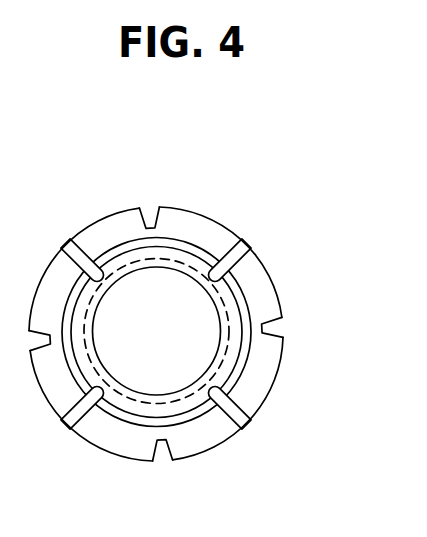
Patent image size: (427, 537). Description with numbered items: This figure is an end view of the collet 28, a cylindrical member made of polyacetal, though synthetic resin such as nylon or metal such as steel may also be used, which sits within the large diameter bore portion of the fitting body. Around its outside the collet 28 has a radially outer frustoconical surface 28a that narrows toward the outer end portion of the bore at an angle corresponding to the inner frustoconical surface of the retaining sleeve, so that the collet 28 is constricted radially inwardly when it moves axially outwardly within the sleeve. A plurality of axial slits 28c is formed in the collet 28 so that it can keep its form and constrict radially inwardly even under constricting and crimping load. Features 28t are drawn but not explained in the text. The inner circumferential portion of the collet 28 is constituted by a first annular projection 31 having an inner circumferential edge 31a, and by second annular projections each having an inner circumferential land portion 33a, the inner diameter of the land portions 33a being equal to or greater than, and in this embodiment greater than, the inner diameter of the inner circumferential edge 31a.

The collet 28 is at (241, 146).
The radially outer frustoconical surface 28a is at (205, 226).
The axial slits 28c is at (284, 328).
The radial ribs 28t is at (187, 268).
The first annular projection 31 is at (113, 265).
The inner circumferential edge 31a is at (133, 270).
The inner circumferential land portion 33a is at (163, 403).